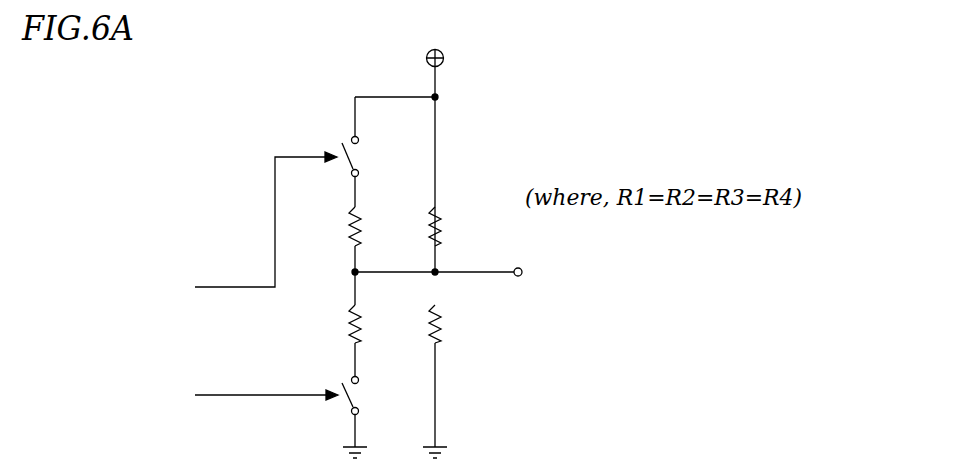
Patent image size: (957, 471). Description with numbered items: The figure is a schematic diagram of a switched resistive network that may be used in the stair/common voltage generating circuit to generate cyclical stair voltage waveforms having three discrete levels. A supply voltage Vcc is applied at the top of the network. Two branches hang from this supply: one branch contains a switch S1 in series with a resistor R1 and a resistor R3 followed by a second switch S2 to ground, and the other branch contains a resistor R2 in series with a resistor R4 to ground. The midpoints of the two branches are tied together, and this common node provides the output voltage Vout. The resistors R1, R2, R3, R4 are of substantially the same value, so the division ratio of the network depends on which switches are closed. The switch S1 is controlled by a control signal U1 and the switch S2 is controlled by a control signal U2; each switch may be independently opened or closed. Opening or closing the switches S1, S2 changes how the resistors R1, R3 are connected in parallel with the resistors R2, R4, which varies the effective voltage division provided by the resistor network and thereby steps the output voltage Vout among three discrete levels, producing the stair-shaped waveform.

The supply voltage Vcc is at (458, 59).
The switch S1 is at (366, 157).
The switch S2 is at (366, 396).
The resistor R1 is at (338, 226).
The resistor R2 is at (452, 226).
The resistor R3 is at (338, 324).
The resistor R4 is at (452, 324).
The control signal U1 is at (257, 219).
The control signal U2 is at (257, 384).
The output voltage Vout is at (507, 274).